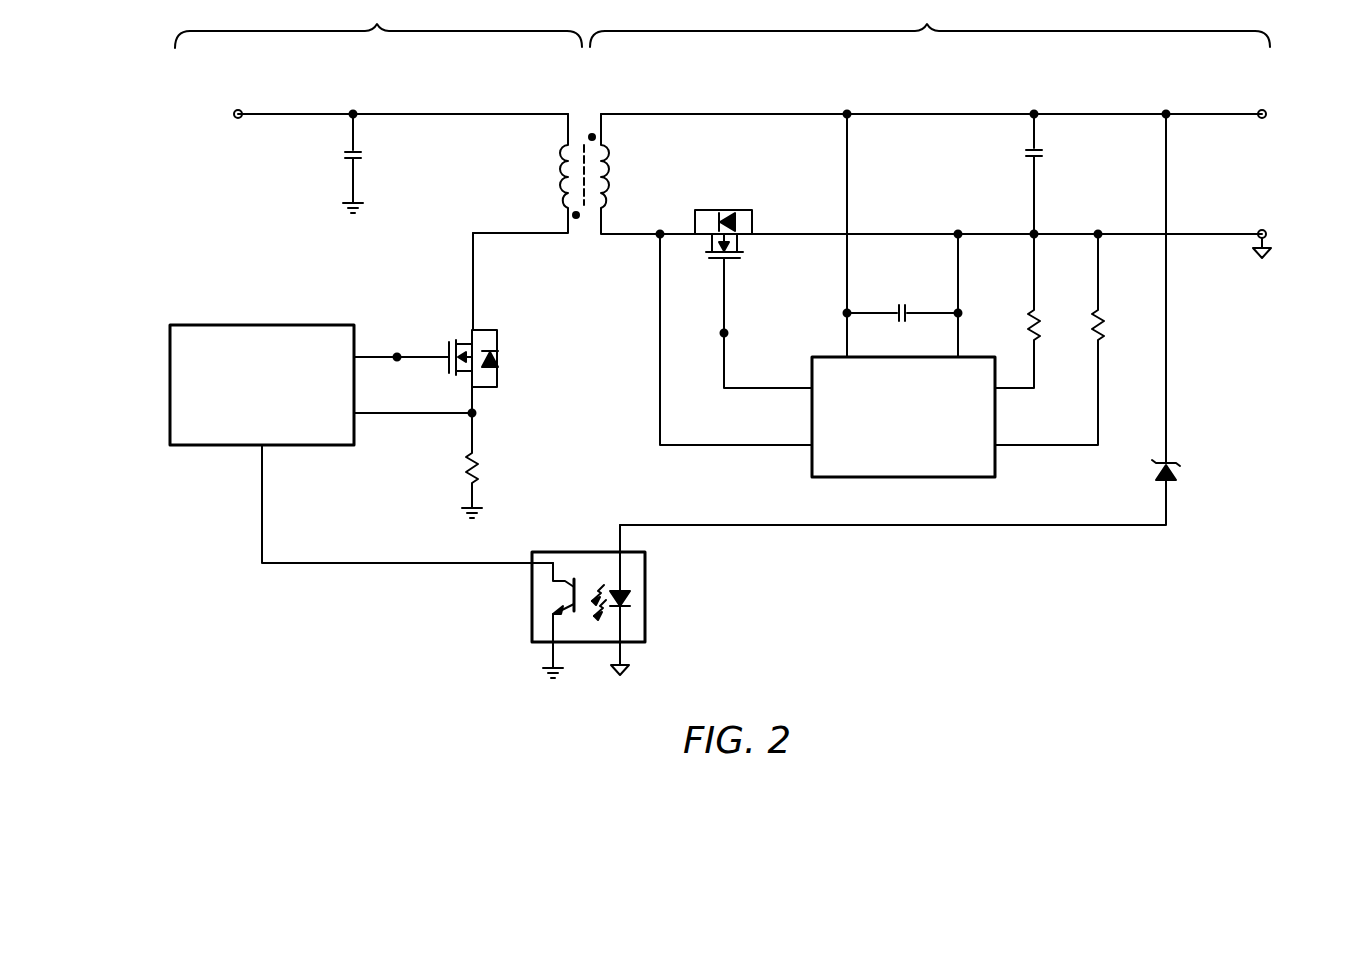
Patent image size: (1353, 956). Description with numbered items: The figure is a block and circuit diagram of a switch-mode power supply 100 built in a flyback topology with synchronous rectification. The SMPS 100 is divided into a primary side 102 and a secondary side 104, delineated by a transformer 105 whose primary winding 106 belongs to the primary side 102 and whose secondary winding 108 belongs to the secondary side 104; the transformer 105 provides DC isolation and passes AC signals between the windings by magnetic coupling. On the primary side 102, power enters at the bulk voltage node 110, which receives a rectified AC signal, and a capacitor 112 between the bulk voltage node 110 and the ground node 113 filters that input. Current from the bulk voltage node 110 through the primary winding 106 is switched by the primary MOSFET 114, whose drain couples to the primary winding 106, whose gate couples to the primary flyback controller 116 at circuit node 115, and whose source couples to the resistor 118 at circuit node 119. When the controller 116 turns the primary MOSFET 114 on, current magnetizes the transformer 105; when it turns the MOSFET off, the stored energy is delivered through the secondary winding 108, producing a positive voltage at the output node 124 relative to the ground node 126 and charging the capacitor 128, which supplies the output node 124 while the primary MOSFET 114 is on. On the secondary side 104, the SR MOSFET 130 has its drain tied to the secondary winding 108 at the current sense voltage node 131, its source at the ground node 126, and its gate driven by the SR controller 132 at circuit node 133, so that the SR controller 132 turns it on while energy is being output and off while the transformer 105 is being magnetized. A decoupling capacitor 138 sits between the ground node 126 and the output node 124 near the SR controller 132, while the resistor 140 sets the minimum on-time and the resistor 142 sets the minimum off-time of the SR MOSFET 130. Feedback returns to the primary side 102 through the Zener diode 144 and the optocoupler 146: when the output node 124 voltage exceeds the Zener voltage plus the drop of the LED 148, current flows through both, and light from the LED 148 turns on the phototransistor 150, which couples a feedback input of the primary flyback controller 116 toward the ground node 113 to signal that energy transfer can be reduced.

The switch-mode power supply 100 is at (148, 122).
The primary side 102 is at (378, 24).
The secondary side 104 is at (930, 23).
The transformer 105 is at (867, 141).
The primary winding 106 is at (568, 170).
The secondary winding 108 is at (601, 171).
The bulk voltage node 110 is at (238, 120).
The capacitor 112 is at (350, 154).
The ground node 113 is at (356, 206).
The primary MOSFET 114 is at (494, 330).
The circuit node 115 is at (398, 354).
The primary flyback controller 116 is at (262, 325).
The resistor 118 is at (479, 468).
The circuit node 119 is at (477, 413).
The voltage output node 124 is at (1266, 118).
The ground node 126 is at (1262, 230).
The capacitor 128 is at (1040, 154).
The SR MOSFET 130 is at (740, 210).
The current sense voltage node 131 is at (658, 238).
The SR controller 132 is at (904, 478).
The circuit node 133 is at (727, 333).
The decoupling capacitor 138 is at (902, 308).
The resistor 140 is at (1041, 323).
The resistor 142 is at (1103, 323).
The Zener diode 144 is at (1175, 471).
The optocoupler 146 is at (589, 583).
The LED 148 is at (628, 592).
The phototransistor 150 is at (561, 603).